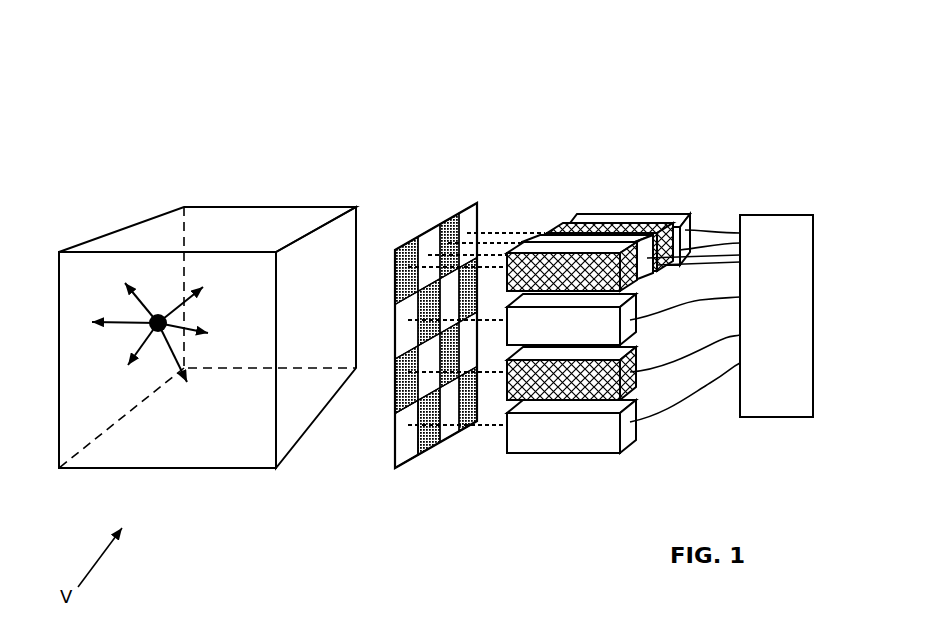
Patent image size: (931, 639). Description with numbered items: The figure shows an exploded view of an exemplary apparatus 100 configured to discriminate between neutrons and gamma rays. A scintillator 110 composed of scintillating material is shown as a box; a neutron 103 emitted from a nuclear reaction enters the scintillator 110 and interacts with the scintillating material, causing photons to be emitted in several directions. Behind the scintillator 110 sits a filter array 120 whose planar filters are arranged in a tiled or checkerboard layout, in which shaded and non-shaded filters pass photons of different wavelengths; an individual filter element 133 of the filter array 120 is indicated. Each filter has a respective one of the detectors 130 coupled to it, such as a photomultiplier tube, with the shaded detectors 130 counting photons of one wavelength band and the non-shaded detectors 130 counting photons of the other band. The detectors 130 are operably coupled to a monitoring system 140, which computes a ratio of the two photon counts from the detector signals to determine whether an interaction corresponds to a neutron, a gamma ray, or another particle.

The apparatus 100 is at (436, 268).
The neutron 103 is at (158, 332).
The scintillator 110 is at (252, 469).
The filter array 120 is at (412, 172).
The mask element (aperture cell) 133 is at (395, 432).
The detectors 130 is at (650, 448).
The monitoring system 140 is at (721, 318).